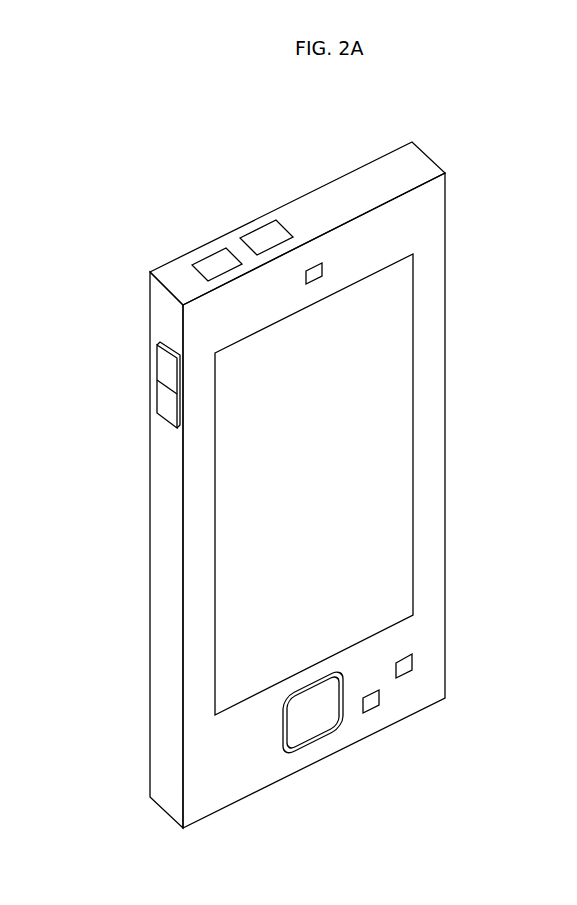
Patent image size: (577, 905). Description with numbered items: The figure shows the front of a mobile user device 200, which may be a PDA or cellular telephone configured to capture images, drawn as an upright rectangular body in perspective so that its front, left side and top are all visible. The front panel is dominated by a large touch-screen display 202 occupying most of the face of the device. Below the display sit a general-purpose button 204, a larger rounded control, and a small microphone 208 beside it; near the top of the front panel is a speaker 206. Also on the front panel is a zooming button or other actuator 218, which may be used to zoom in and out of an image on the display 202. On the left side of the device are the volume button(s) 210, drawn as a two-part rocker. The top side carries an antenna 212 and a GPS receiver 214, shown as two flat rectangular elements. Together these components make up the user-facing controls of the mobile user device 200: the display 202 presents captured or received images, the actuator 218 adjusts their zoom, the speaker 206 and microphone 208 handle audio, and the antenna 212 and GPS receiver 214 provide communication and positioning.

The mobile user device 200 is at (423, 103).
The touch-screen display 202 is at (217, 547).
The general-purpose button 204 is at (317, 745).
The speaker 206 is at (317, 260).
The microphone 208 is at (383, 705).
The volume button 210 is at (155, 393).
The antenna 212 is at (193, 263).
The GPS receiver 214 is at (252, 230).
The zooming button or other actuator 218 is at (415, 663).